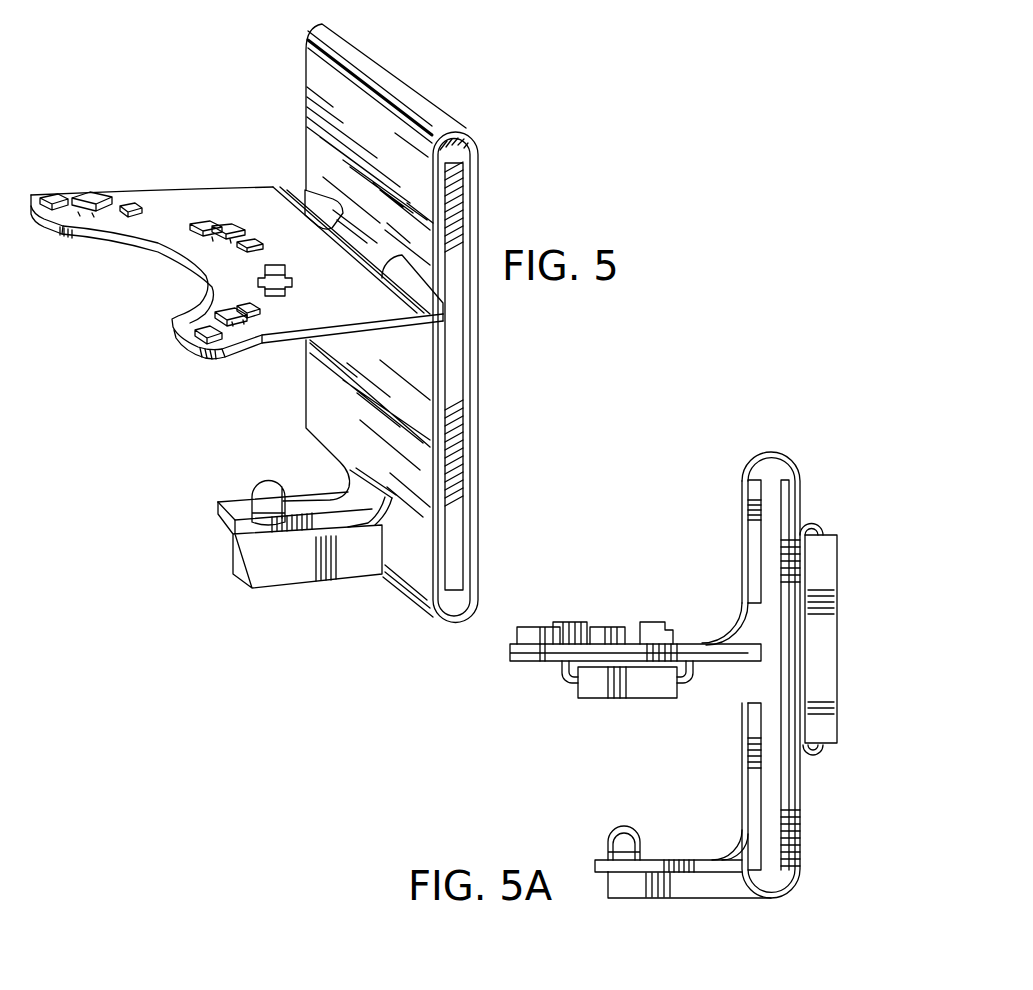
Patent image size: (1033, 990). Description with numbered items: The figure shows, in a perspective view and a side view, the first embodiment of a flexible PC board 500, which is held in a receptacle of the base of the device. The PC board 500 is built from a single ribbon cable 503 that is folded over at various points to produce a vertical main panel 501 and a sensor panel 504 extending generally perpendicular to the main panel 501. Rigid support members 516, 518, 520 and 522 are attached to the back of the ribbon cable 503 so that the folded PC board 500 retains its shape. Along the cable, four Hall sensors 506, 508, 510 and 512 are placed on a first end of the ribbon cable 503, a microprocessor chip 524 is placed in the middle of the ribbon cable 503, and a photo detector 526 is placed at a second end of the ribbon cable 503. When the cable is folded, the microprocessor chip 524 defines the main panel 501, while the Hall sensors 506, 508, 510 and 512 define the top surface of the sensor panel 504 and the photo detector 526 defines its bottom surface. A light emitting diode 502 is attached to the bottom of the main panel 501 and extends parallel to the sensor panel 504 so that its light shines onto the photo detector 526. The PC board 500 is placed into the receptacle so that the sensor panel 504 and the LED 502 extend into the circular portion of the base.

In FIG. 5, the flexible PC board 500 is at (170, 432).
In FIG. 5A, the flexible PC board 500 is at (520, 765).
In FIG. 5, the main panel 501 is at (479, 385).
In FIG. 5, the light emitting diode (LED) 502 is at (265, 490).
In FIG. 5A, the light emitting diode (LED) 502 is at (622, 838).
In FIG. 5, the ribbon cable 503 is at (428, 114).
In FIG. 5A, the ribbon cable 503 is at (752, 462).
In FIG. 5, the sensor panel 504 is at (245, 190).
In FIG. 5, the Hall sensor 506 is at (103, 193).
In FIG. 5, the Hall sensor 508 is at (200, 236).
In FIG. 5, the Hall sensor 510 is at (293, 281).
In FIG. 5, the Hall sensor 512 is at (190, 316).
In FIG. 5A, the rigid support member 516 is at (803, 840).
In FIG. 5A, the rigid support member 518 is at (748, 538).
In FIG. 5A, the rigid support member 520 is at (750, 742).
In FIG. 5A, the rigid support member 522 is at (510, 652).
In FIG. 5A, the microprocessor chip 524 is at (828, 545).
In FIG. 5A, the photo detector 526 is at (620, 700).